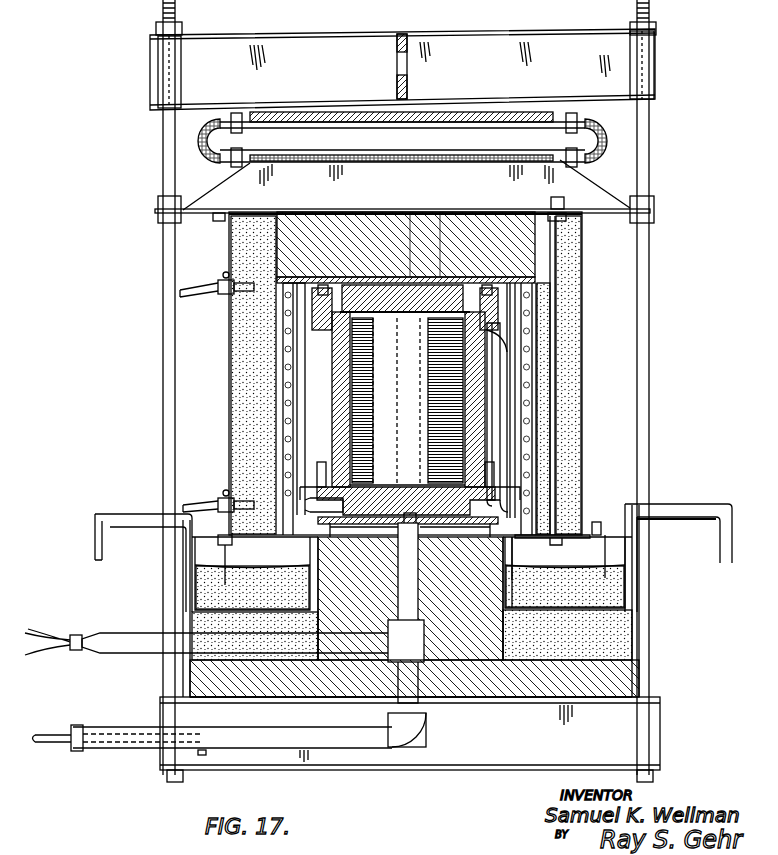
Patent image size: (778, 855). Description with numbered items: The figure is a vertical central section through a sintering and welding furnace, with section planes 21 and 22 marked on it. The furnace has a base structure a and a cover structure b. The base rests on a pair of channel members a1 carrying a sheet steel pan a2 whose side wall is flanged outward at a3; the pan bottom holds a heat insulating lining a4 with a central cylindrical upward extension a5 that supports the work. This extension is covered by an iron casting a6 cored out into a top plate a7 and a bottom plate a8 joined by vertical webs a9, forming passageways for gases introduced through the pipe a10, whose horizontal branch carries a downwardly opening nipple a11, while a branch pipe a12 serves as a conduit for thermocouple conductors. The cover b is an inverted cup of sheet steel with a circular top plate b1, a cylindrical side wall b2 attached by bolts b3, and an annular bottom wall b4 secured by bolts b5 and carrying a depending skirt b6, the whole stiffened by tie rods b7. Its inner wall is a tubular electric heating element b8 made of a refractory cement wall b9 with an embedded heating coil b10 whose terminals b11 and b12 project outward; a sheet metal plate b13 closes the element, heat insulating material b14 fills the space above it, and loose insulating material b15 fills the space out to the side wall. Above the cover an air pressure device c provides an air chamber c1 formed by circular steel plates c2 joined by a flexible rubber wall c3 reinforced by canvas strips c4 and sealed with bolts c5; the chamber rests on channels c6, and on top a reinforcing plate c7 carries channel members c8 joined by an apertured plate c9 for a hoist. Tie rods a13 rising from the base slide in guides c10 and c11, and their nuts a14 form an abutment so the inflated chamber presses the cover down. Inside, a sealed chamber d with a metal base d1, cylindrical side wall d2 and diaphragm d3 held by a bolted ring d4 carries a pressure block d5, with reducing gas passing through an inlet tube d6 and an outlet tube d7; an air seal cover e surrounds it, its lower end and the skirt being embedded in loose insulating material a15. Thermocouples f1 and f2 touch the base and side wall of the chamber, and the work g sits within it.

The base structure a is at (672, 592).
The channel member a1 is at (508, 765).
The sheet steel tub or pan a2 is at (640, 630).
The outward flange of pan side wall a3 is at (675, 520).
The heat insulating lining a4 is at (605, 688).
The central cylindrical upward extension a5 is at (480, 698).
The iron casting a6 is at (472, 555).
The top plate of iron casting a7 is at (372, 538).
The bottom plate of iron casting a8 is at (380, 558).
The vertical webs a9 is at (445, 535).
The gas pipe a10 is at (355, 750).
The downwardly opening nipple a11 is at (204, 755).
The branch pipe a12 is at (130, 652).
The tie bolts or rods a13 is at (680, 302).
The nuts a14 is at (182, 30).
The loose heat insulating material a15 is at (200, 590).
The top or cover structure b is at (608, 262).
The circular top plate b1 is at (484, 212).
The cylindrical side wall b2 is at (582, 332).
The bolts b3 is at (572, 215).
The annular bottom wall b4 is at (566, 541).
The bolts b5 is at (596, 520).
The depending flange or skirt b6 is at (222, 547).
The tie rods or bolts b7 is at (553, 395).
The tubular electric heating element b8 is at (528, 365).
The refractory and heat insulating cement wall b9 is at (533, 420).
The electric heating coil b10 is at (533, 443).
The coil terminal b11 is at (201, 280).
The coil terminal b12 is at (200, 498).
The sheet metal plate b13 is at (325, 275).
The heat insulating material b14 is at (412, 212).
The loose heat insulating material b15 is at (570, 295).
The air pressure device c is at (620, 140).
The air chamber c1 is at (608, 148).
The circular steel plates c2 is at (333, 112).
The flexible rubber wall c3 is at (212, 152).
The canvas strips c4 is at (200, 132).
The bolts c5 is at (234, 114).
The steel channel c6 is at (615, 183).
The circular reinforcing plate c7 is at (474, 111).
The channel members c8 is at (364, 38).
The apertured plate c9 is at (404, 34).
The guides c10 is at (683, 214).
The guides c11 is at (678, 70).
The sealed inner metal chamber d is at (330, 378).
The metal base d1 is at (386, 487).
The cylindrical side wall d2 is at (330, 410).
The sheet metal top wall or diaphragm d3 is at (405, 312).
The bolted ring d4 is at (312, 316).
The pressure block d5 is at (438, 278).
The inlet tube d6 is at (120, 514).
The outlet tube d7 is at (688, 504).
The air seal cover e is at (300, 352).
The tube f is at (500, 332).
The thermocouple f1 is at (410, 513).
The thermocouple f2 is at (492, 344).
The work g is at (407, 401).
The section line 21 is at (761, 405).
The section line 22 is at (540, 555).